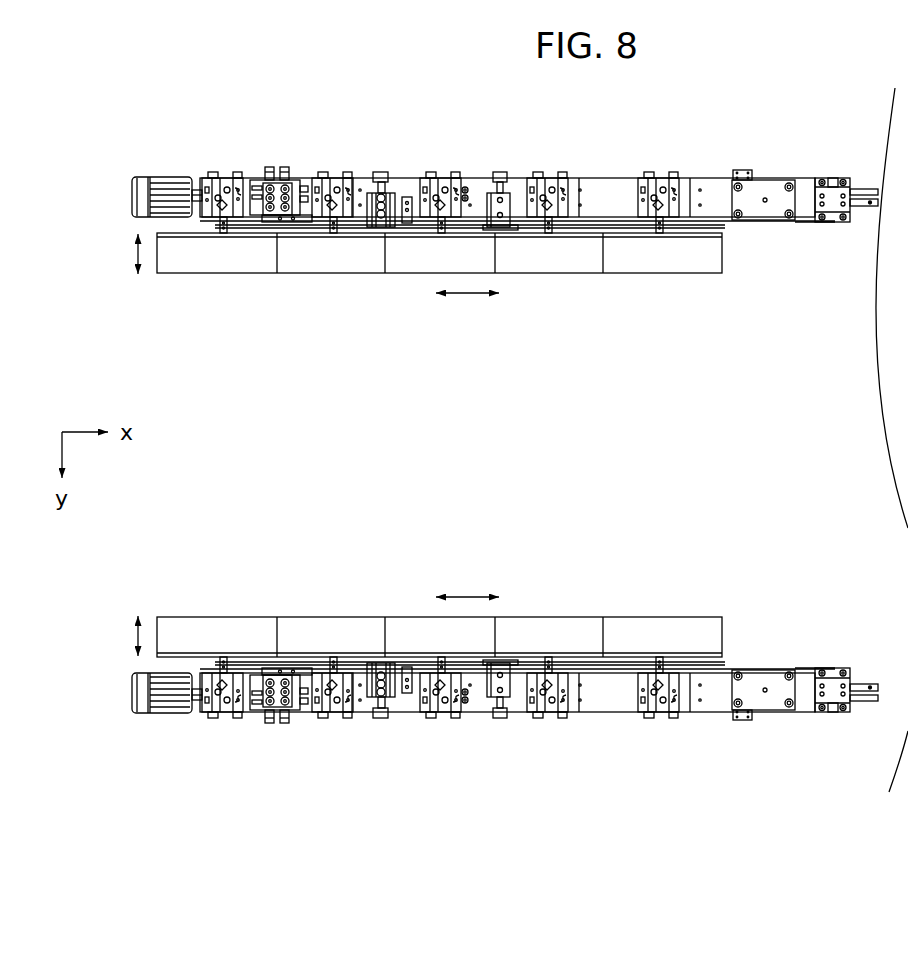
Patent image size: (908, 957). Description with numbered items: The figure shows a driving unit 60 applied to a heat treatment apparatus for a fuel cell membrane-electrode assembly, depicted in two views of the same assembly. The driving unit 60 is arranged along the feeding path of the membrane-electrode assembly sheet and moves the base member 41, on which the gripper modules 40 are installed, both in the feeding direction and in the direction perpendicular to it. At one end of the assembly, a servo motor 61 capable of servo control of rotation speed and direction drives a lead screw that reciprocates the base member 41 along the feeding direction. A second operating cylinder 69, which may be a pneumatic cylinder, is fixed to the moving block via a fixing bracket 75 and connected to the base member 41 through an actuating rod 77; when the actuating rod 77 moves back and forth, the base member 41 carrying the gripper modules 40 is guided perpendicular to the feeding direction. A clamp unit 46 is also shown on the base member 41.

The gripper module 40 is at (183, 277).
The base member 41 is at (606, 190).
The clamp unit 46 is at (465, 185).
The driving unit 60 is at (337, 163).
The servo motor 61 is at (131, 194).
The second operating cylinder 69 is at (398, 195).
The fixing bracket 75 is at (507, 229).
The actuating rod 77 is at (505, 178).